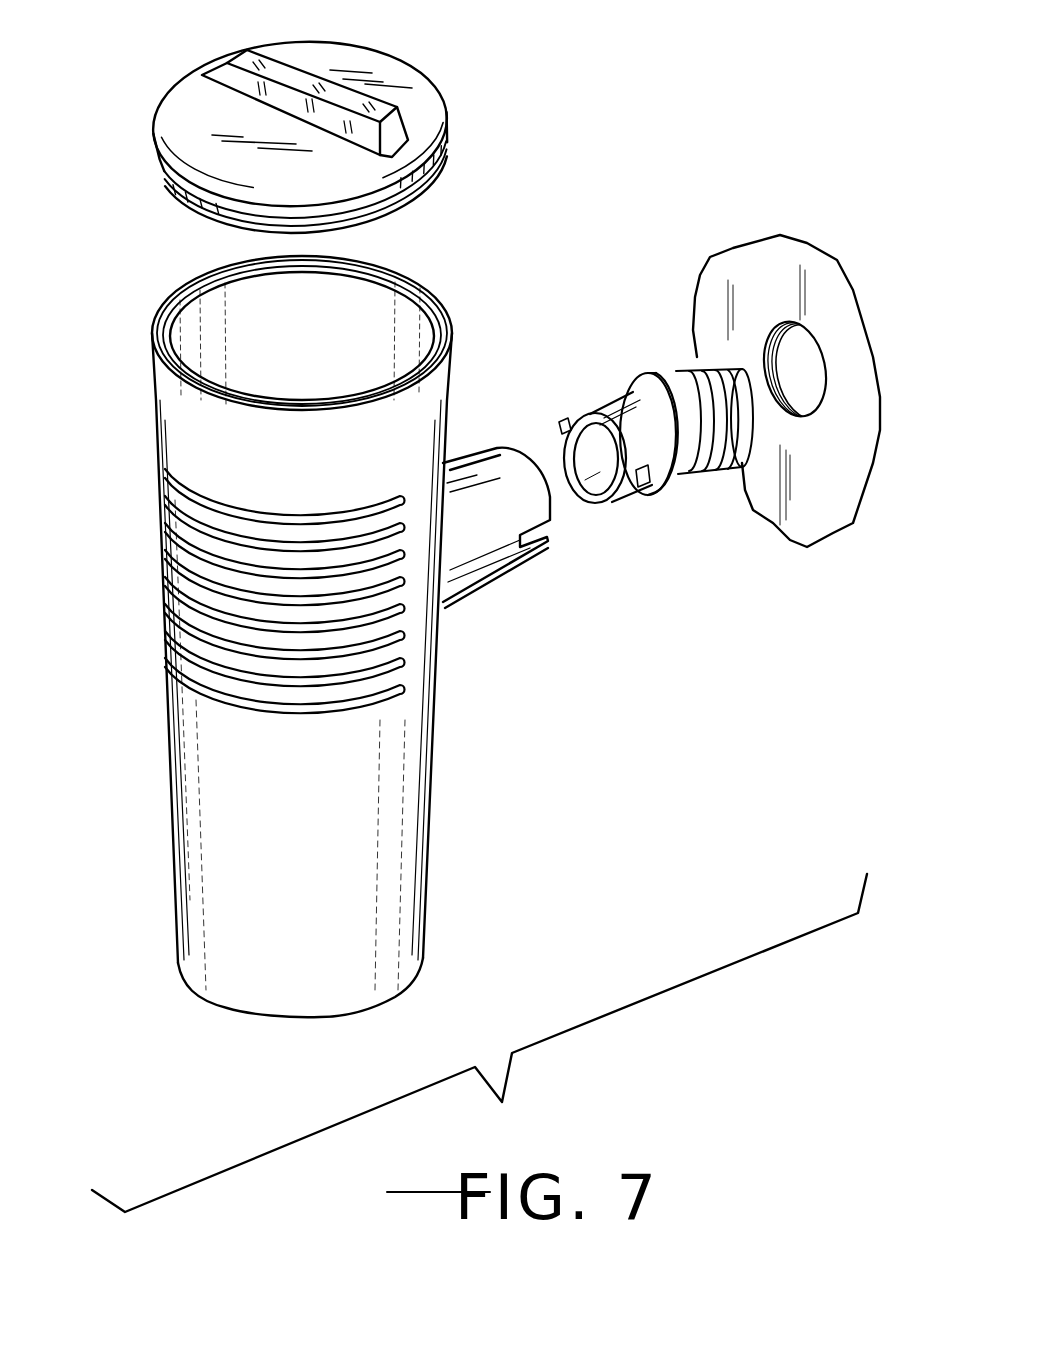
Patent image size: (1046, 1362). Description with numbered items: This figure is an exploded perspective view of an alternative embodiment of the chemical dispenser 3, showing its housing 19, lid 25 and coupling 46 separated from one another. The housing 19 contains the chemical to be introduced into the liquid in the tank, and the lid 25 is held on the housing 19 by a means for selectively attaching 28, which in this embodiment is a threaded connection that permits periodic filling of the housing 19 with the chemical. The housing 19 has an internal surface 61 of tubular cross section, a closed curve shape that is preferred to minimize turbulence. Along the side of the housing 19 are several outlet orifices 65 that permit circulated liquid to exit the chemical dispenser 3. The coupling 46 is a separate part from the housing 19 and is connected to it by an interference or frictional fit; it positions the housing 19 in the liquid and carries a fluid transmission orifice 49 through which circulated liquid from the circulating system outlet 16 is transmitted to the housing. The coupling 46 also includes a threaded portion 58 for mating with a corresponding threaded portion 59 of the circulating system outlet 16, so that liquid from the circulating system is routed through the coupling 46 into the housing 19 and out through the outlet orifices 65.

The chemical dispenser 3 is at (315, 615).
The circulating system outlet 16 is at (805, 391).
The housing 19 is at (432, 766).
The lid 25 is at (413, 62).
The means for selectively attaching 28 is at (407, 300).
The coupling 46 is at (647, 469).
The fluid transmission orifice 49 is at (605, 473).
The threaded portion 58 is at (743, 462).
The threaded portion 59 is at (790, 418).
The internal surface 61 is at (305, 312).
The outlet orifices 65 is at (268, 722).